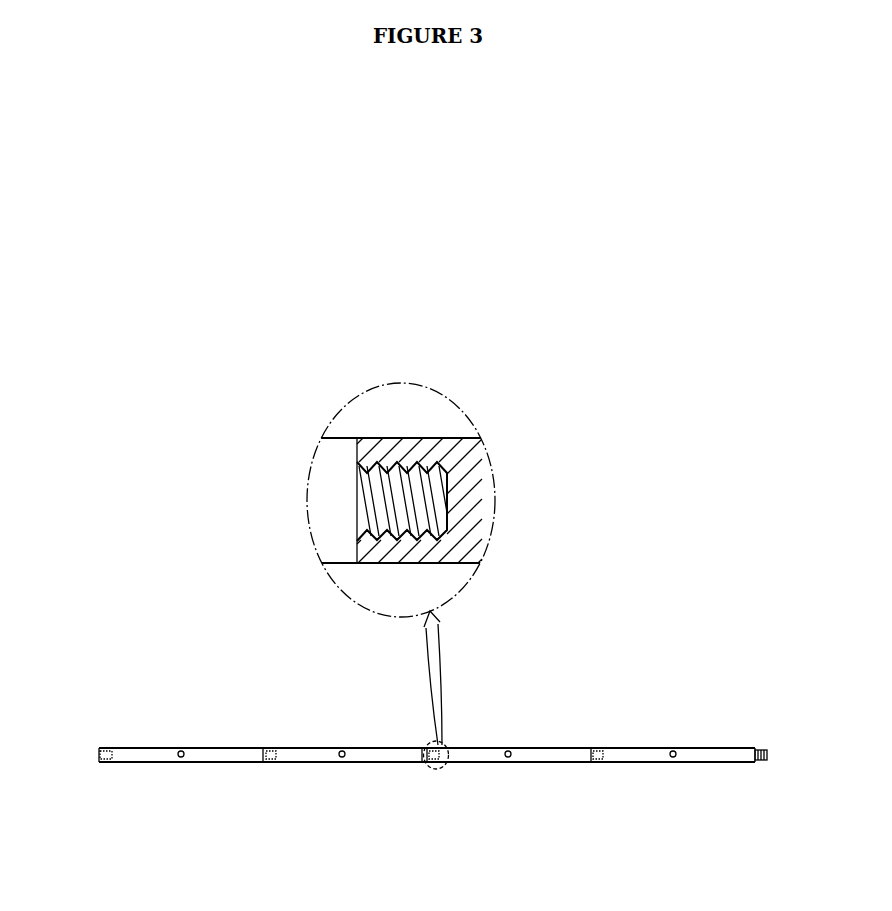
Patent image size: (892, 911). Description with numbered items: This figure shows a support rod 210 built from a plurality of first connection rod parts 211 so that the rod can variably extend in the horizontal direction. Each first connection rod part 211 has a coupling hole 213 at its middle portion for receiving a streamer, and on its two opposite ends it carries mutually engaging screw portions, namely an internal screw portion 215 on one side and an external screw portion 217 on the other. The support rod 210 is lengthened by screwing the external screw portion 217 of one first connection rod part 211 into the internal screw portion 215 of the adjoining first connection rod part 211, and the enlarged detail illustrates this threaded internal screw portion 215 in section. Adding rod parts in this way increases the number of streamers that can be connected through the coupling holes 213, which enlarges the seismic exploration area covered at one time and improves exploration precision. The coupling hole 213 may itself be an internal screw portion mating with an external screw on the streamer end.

The support rod 210 is at (212, 513).
The first connection rod part 211 is at (148, 765).
The coupling hole 213 is at (181, 766).
The internal screw portion 215 is at (417, 466).
The external screw portion 217 is at (438, 500).